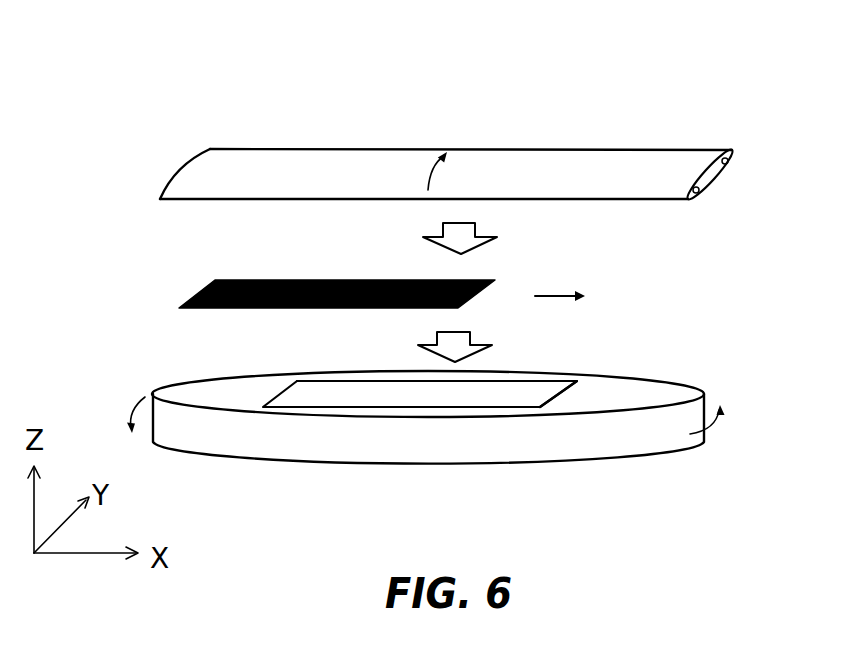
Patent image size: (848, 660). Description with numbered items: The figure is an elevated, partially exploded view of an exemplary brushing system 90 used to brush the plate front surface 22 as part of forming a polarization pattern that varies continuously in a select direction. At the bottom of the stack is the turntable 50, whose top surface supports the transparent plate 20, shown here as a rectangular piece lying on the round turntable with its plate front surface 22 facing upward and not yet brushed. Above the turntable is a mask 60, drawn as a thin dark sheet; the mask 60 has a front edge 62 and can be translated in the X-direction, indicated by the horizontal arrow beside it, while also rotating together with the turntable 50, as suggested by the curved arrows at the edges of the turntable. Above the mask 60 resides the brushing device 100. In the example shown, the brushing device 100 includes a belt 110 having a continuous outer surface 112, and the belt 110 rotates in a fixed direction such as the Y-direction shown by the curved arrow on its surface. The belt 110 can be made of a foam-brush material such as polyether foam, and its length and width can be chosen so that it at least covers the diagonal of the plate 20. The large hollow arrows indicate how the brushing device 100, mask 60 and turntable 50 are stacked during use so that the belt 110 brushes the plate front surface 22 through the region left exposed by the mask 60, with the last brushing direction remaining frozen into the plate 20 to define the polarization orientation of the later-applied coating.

The brushing system 90 is at (682, 48).
The brushing device 100 is at (172, 106).
The belt 110 is at (656, 155).
The continuous outer surface 112 is at (588, 168).
The mask 60 is at (182, 275).
The front edge 62 is at (485, 287).
The turntable 50 is at (587, 440).
The transparent plate 20 is at (283, 392).
The plate front surface 22 is at (543, 388).